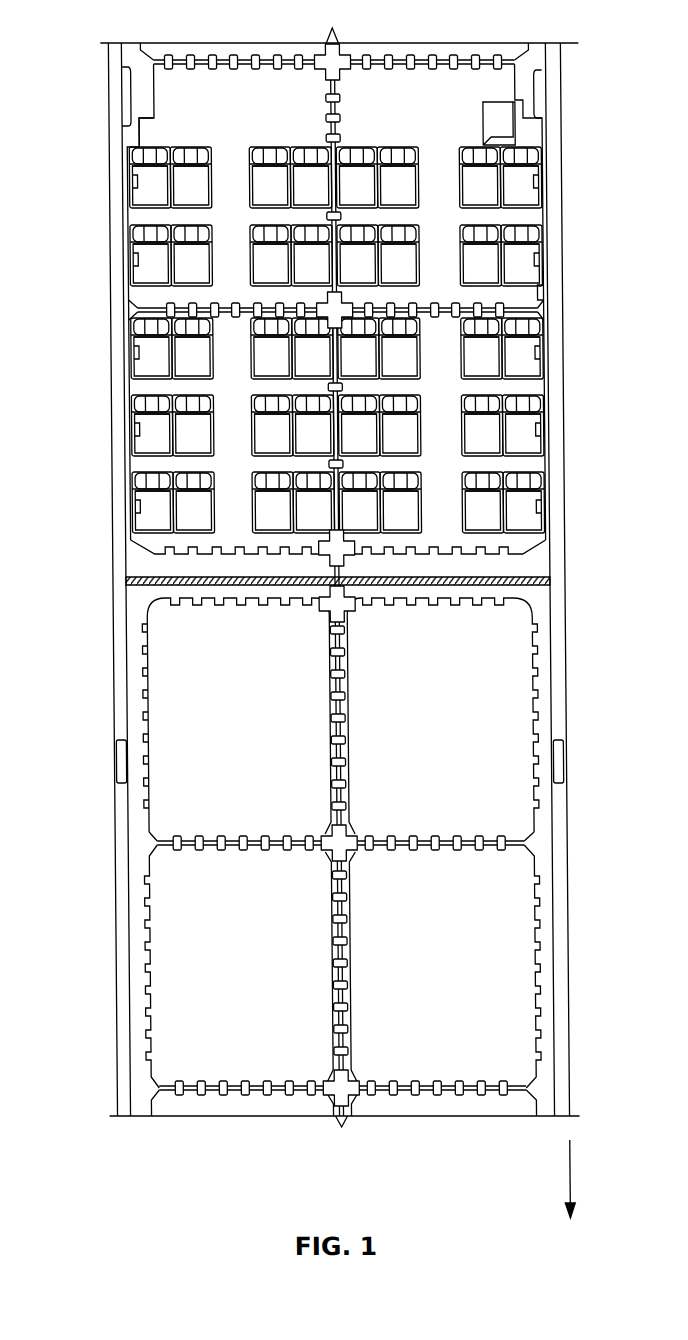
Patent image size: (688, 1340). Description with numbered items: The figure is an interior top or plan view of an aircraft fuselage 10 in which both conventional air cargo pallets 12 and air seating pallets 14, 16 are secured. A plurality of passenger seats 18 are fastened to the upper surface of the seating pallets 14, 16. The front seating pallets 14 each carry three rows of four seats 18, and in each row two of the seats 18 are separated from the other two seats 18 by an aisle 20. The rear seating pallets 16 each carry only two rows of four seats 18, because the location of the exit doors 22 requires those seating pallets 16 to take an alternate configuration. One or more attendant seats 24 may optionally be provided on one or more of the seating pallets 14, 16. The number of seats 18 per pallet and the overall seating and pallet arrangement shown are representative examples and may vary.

The aircraft fuselage 10 is at (100, 563).
The air cargo pallet 12 is at (159, 718).
The front seating pallet 14 is at (154, 552).
The rear seating pallet 16 is at (145, 135).
The passenger seat 18 is at (133, 262).
The aisle 20 is at (224, 512).
The exit door 22 is at (120, 80).
The attendant seat 24 is at (502, 128).